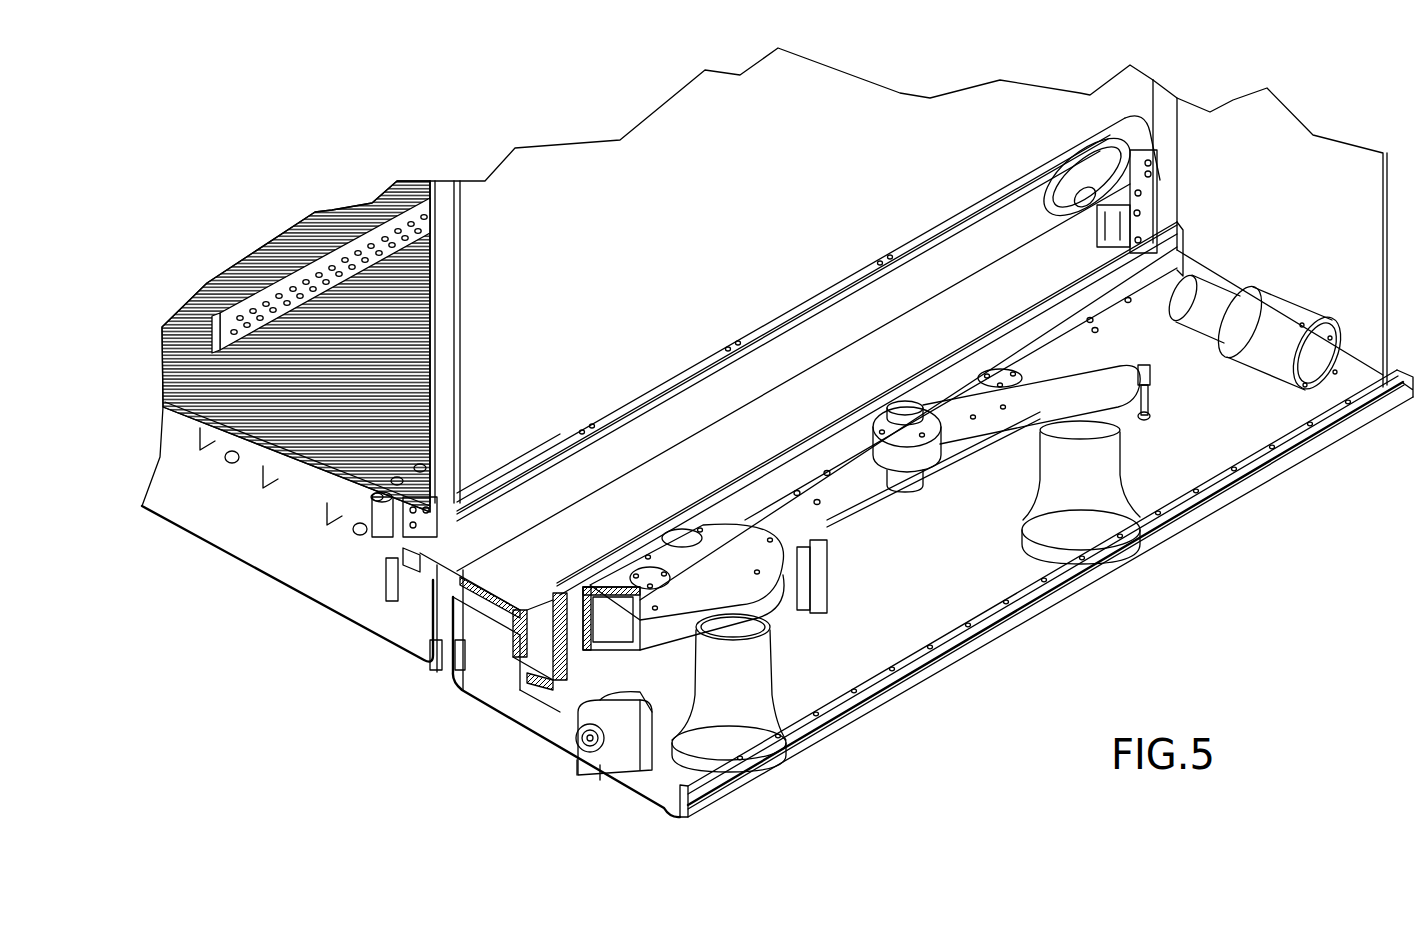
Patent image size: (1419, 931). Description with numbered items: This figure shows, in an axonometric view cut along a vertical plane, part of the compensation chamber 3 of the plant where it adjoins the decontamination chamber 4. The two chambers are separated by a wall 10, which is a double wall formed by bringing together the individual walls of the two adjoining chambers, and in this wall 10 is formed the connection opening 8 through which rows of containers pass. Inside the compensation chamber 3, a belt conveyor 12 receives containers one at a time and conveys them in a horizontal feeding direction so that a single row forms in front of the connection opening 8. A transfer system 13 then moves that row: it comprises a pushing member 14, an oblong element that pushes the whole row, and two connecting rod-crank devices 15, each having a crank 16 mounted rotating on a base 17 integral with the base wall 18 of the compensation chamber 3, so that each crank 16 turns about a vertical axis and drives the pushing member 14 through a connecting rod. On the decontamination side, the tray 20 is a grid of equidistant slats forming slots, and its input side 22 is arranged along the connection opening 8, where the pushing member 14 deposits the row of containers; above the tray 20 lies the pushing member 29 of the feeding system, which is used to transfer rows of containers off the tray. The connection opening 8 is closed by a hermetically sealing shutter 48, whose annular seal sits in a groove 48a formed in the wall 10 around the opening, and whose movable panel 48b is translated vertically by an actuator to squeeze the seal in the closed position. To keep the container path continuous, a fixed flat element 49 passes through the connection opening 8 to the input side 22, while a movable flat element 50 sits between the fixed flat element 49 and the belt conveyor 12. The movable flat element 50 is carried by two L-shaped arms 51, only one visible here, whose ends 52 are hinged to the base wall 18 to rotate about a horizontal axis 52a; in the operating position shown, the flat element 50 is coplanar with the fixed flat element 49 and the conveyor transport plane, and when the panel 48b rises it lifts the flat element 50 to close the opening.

The compensation chamber 3 is at (1245, 220).
The decontamination chamber 4 is at (266, 218).
The first connection opening 8 is at (958, 255).
The wall 10 is at (533, 203).
The belt conveyor 12 is at (500, 655).
The transfer system 13 is at (912, 545).
The pushing member 14 is at (1150, 257).
The connecting rod-crank device 15 is at (998, 462).
The crank 16 is at (795, 563).
The base 17 is at (1132, 492).
The base wall 18 is at (1273, 420).
The tray 20 is at (290, 499).
The input side 22 is at (433, 556).
The pushing member 29 is at (296, 272).
The hermetically sealing shutter 48 is at (448, 692).
The groove 48a is at (514, 486).
The movable panel 48b is at (428, 674).
The fixed flat element 49 is at (466, 648).
The movable flat element 50 is at (503, 680).
The L-shaped arm 51 is at (560, 712).
The end 52 is at (675, 790).
The horizontal axis 52a is at (558, 752).